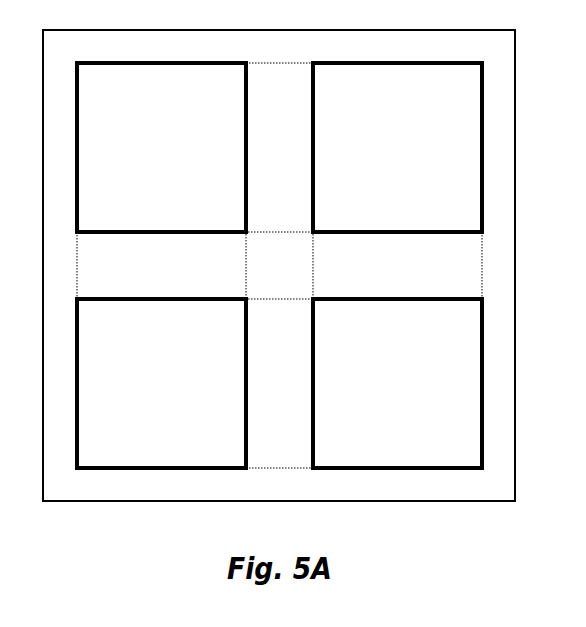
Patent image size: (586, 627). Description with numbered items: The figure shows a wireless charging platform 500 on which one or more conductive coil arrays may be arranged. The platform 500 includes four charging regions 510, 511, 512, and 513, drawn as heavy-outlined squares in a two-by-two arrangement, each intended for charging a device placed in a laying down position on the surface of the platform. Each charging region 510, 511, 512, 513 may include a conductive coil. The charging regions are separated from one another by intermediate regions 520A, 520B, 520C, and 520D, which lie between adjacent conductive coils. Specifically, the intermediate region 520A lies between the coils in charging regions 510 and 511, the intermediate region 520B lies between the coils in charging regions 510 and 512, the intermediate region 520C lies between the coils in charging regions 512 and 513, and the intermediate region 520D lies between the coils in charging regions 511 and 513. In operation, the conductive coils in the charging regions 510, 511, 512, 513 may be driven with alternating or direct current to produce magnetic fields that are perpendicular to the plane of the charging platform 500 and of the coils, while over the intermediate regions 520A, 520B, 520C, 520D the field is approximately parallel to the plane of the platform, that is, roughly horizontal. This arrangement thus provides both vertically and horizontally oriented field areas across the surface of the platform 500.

The wireless charging platform 500 is at (517, 107).
The charging region 510 is at (179, 158).
The charging region 511 is at (179, 395).
The charging region 512 is at (416, 158).
The charging region 513 is at (416, 395).
The intermediate region 520A is at (187, 277).
The intermediate region 520B is at (306, 159).
The intermediate region 520C is at (423, 276).
The intermediate region 520D is at (305, 395).